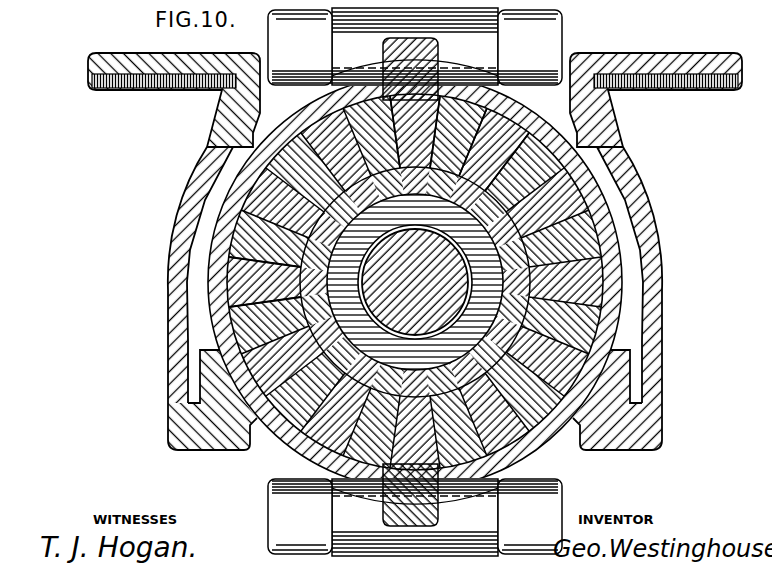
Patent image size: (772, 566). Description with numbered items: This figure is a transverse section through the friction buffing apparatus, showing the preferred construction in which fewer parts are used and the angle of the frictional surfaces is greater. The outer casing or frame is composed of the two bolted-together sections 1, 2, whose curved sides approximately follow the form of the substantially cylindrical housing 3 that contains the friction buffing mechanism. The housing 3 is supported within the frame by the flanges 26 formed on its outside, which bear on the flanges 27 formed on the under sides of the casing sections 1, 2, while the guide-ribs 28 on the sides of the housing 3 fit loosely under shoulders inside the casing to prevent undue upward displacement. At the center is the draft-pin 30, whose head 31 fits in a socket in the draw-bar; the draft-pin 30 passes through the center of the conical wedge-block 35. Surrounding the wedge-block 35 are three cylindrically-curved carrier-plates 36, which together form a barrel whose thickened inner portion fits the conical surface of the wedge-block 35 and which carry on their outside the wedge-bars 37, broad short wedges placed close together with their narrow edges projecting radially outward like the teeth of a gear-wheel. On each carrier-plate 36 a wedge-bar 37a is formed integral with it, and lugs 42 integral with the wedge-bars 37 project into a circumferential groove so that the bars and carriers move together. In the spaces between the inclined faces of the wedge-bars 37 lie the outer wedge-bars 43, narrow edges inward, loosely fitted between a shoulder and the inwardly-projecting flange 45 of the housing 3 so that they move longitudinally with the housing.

The casing section 1 is at (170, 311).
The casing section 2 is at (658, 323).
The housing 3 is at (222, 352).
The flanges 26 is at (200, 402).
The flanges 27 is at (224, 452).
The guide-ribs 28 is at (227, 162).
The draft-pin 30 is at (415, 282).
The head 31 is at (494, 149).
The wedge-block 35 is at (455, 350).
The carrier-plates 36 is at (415, 282).
The wedge-bars 37 is at (236, 242).
The wedge-bar 37a is at (670, 213).
The lugs 42 is at (623, 296).
The outer wedge-bars 43 is at (226, 273).
The flange 45 is at (415, 131).